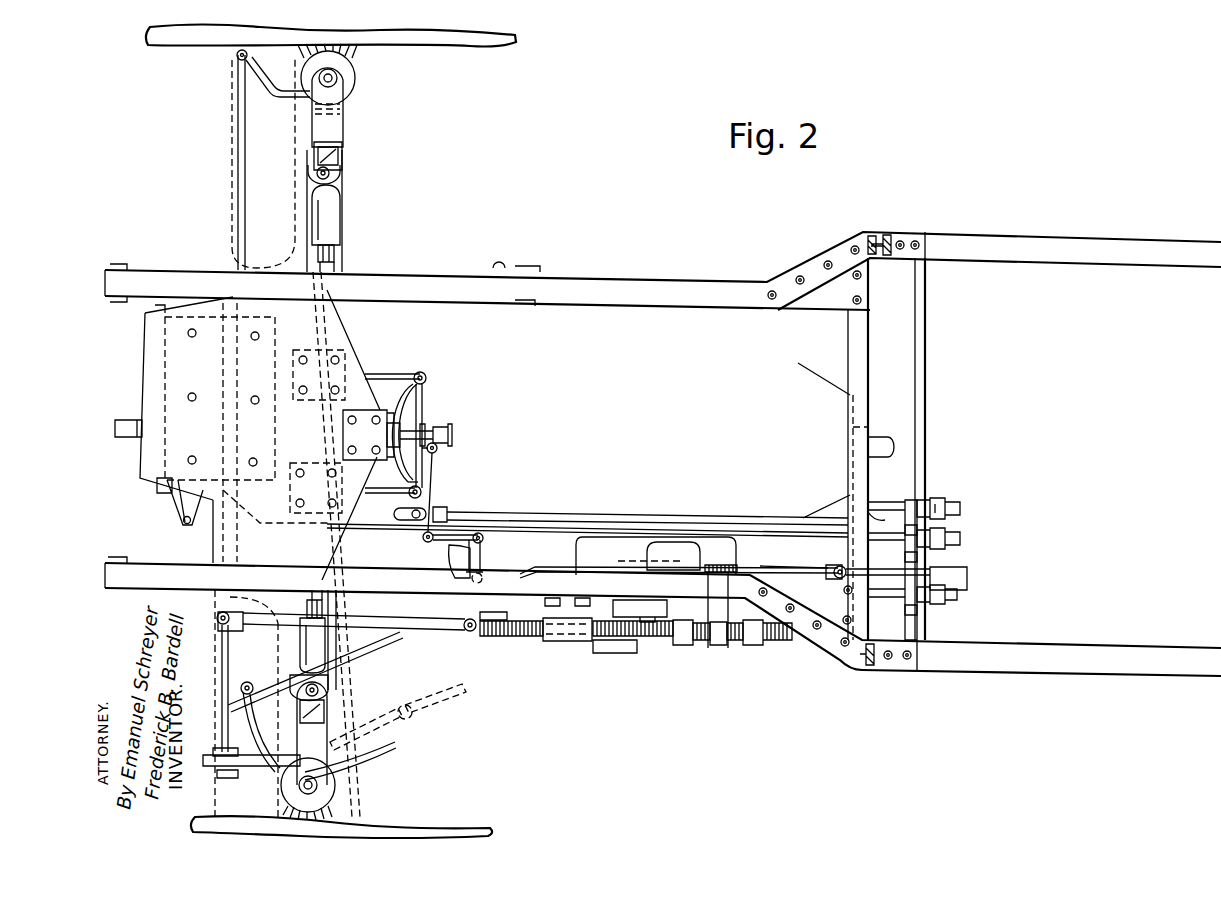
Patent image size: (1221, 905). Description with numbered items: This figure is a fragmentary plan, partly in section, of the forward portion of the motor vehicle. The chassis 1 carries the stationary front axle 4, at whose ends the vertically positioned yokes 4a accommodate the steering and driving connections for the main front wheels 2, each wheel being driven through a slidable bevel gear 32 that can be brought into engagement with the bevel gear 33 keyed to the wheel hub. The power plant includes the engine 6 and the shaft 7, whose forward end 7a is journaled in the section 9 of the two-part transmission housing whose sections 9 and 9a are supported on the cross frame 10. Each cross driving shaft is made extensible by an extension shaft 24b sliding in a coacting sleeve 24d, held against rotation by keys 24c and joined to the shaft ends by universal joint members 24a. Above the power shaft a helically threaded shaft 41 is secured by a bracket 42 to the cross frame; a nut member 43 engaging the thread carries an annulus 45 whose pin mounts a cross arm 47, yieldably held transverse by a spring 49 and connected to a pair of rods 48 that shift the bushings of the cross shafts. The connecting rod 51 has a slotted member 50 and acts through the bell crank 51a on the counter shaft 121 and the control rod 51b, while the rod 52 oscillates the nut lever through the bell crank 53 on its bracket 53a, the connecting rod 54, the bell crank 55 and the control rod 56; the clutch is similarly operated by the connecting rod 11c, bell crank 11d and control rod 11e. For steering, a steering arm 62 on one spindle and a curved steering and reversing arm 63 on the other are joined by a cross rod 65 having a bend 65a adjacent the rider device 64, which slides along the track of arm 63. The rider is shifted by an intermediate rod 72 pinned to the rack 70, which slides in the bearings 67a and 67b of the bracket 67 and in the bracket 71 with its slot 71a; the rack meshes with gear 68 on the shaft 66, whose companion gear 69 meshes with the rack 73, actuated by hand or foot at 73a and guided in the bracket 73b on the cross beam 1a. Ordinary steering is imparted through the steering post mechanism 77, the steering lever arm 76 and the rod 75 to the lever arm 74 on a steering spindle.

The chassis 1 is at (663, 473).
The cross beam 1a is at (891, 449).
The main front wheel 2 is at (331, 432).
The front axle 4 is at (354, 483).
The yoke 4a is at (355, 435).
The motor or engine 6 is at (832, 486).
The shaft 7 is at (881, 427).
The forward end of power shaft 7a is at (121, 407).
The housing section 9 is at (174, 411).
The housing section 9a is at (286, 411).
The cross frame 10 is at (245, 526).
The connecting rod 11c is at (587, 541).
The bell crank 11d is at (953, 540).
The control rod 11e is at (892, 550).
The universal joint member 24a is at (356, 419).
The extension shaft 24b is at (367, 437).
The keys 24c is at (364, 422).
The coacting sleeve 24d is at (361, 429).
The bevel gear 32 is at (347, 431).
The bevel gear 33 is at (348, 433).
The shaft 41 is at (468, 431).
The bracket 42 is at (436, 362).
The nut member 43 is at (444, 418).
The annulus 45 is at (456, 441).
The cross arm 47 is at (442, 421).
The rods 48 is at (371, 435).
The spring 49 is at (395, 482).
The slotted member 50 is at (448, 509).
The connecting rod 51 is at (648, 503).
The bell crank 51a is at (977, 510).
The control rod 51b is at (892, 550).
The rod 52 is at (462, 492).
The bell crank 53 is at (497, 558).
The bracket 53a is at (439, 556).
The connecting rod 54 is at (679, 557).
The bell crank 55 is at (943, 602).
The control rod 56 is at (892, 621).
The steering arm 62 is at (273, 94).
The steering and reversing arm 63 is at (385, 760).
The rider device 64 is at (231, 731).
The cross rod 65 is at (205, 615).
The bend 65a is at (251, 782).
The shaft 66 is at (722, 657).
The bracket 67 is at (698, 673).
The bearing 67a is at (687, 656).
The bearing 67b is at (783, 661).
The gear member 68 is at (745, 673).
The gear member 69 is at (722, 558).
The rack 70 is at (576, 658).
The bracket 71 is at (570, 656).
The slot 71a is at (535, 644).
The intermediate rod 72 is at (359, 681).
The rack 73 is at (788, 554).
The hand or foot actuating portion 73a is at (947, 578).
The bracket 73b is at (810, 529).
The lever arm 74 is at (262, 727).
The rod 75 is at (368, 678).
The steering lever arm 76 is at (631, 608).
The steering post mechanism 77 is at (677, 522).
The counter shaft 121 is at (927, 449).